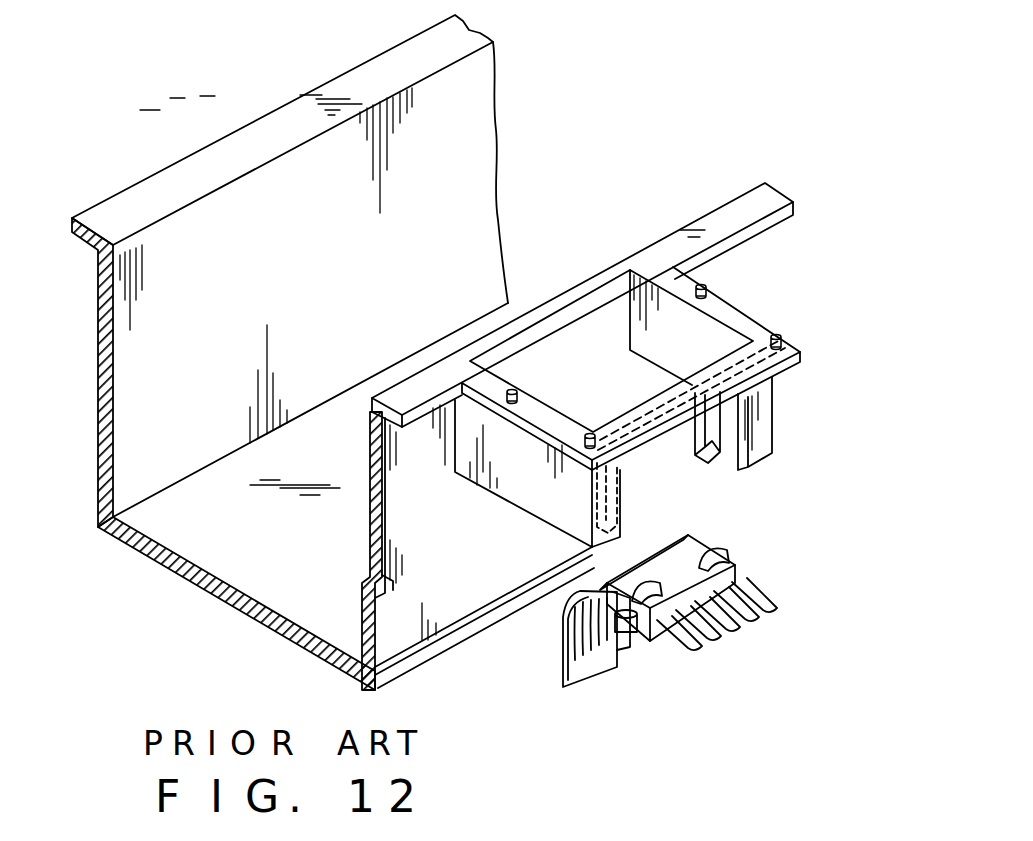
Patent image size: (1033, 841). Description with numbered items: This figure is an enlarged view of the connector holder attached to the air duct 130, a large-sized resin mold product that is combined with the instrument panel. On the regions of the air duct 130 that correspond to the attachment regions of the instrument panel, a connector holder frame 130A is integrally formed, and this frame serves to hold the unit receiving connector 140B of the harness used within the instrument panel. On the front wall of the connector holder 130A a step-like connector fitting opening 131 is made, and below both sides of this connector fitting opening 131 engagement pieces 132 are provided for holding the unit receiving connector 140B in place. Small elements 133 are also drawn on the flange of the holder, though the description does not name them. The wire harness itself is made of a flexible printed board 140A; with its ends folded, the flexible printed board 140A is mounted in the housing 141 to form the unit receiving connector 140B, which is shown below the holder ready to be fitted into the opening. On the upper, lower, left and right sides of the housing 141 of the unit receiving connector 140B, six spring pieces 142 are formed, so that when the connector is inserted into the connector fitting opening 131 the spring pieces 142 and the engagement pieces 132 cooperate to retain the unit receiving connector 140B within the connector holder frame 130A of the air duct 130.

The air duct 130 is at (514, 72).
The connector holder frame 130A is at (762, 430).
The connector fitting opening 131 is at (663, 458).
The engagement piece 132 is at (708, 458).
The rivet 133 is at (590, 436).
The flexible printed board 140A is at (578, 677).
The unit receiving connector 140B is at (695, 663).
The housing 141 is at (732, 627).
The spring piece 142 is at (660, 636).